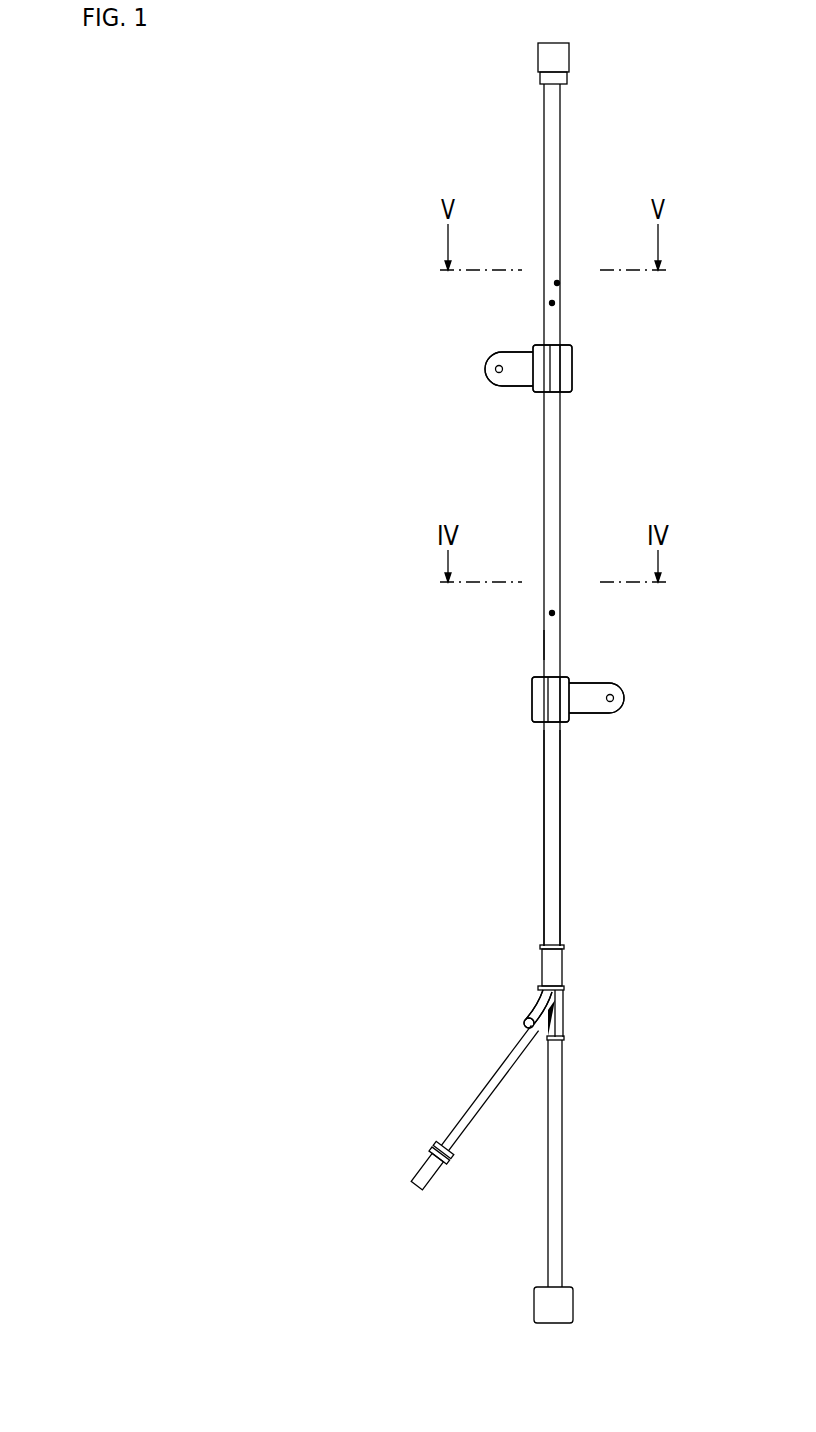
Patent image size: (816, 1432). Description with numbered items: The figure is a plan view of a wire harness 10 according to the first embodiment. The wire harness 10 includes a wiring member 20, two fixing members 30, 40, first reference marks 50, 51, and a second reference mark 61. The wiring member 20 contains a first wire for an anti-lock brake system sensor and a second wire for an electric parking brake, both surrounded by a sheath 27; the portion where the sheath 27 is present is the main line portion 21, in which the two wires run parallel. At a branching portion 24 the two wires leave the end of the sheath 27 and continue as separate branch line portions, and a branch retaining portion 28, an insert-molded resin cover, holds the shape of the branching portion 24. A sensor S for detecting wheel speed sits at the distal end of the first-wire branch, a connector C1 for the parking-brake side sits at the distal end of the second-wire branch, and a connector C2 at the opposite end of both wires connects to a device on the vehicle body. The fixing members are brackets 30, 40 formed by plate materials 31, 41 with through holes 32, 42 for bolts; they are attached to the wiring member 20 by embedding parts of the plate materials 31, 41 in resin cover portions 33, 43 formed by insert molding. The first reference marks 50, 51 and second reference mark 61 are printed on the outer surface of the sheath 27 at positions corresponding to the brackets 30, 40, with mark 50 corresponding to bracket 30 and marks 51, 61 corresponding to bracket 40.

The wire harness 10 is at (348, 98).
The connector C2 is at (570, 58).
The wiring member 20 is at (563, 455).
The main line portion 21 is at (563, 838).
The second reference mark 61 is at (559, 284).
The first reference mark 51 is at (554, 304).
The first reference mark 50 is at (554, 613).
The sheath 27 is at (555, 643).
The fixing member (bracket) 40 is at (502, 393).
The resin cover portion 43 is at (573, 368).
The plate material 41 is at (518, 357).
The through hole 42 is at (496, 367).
The fixing member (bracket) 30 is at (628, 693).
The resin cover portion 33 is at (533, 707).
The plate material 31 is at (597, 714).
The through hole 32 is at (613, 702).
The branch retaining portion 28 is at (565, 1010).
The branching portion 24 is at (526, 1002).
The sensor S is at (432, 1176).
The connector C1 is at (574, 1302).